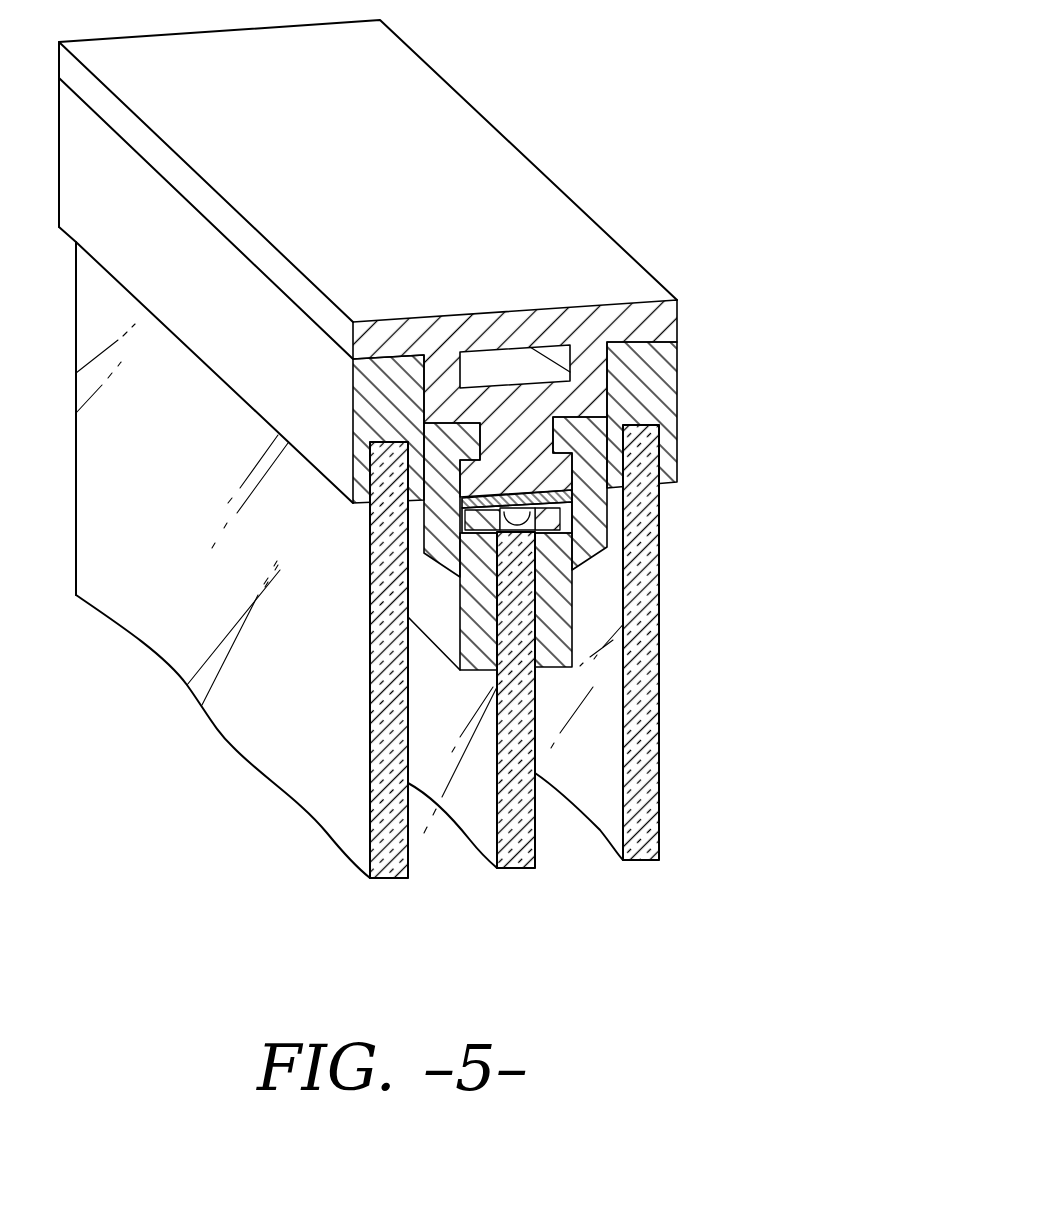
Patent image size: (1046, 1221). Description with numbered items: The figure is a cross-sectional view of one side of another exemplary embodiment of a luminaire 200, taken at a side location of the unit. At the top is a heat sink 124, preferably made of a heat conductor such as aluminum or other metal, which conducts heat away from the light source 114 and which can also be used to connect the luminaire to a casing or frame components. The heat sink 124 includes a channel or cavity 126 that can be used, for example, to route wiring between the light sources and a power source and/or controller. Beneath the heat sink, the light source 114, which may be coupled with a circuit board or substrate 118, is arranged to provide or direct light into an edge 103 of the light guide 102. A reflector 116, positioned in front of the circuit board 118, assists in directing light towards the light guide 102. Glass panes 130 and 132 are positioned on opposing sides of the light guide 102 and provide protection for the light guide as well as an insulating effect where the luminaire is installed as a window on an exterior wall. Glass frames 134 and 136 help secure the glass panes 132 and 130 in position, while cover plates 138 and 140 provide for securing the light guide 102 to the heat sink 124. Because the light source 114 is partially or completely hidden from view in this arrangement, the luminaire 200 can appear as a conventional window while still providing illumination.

The luminaire 200 is at (379, 449).
The heat sink 124 is at (607, 318).
The channel or cavity 126 is at (507, 372).
The glass frame 134 is at (380, 400).
The glass frame 136 is at (647, 383).
The reflector 116 is at (460, 543).
The cover plate 138 is at (473, 617).
The cover plate 140 is at (552, 638).
The circuit board or substrate 118 is at (572, 518).
The edge of light guide 103 is at (543, 536).
The light source 114 is at (522, 535).
The glass pane 132 is at (385, 850).
The light guide 102 is at (517, 837).
The glass pane 130 is at (643, 830).